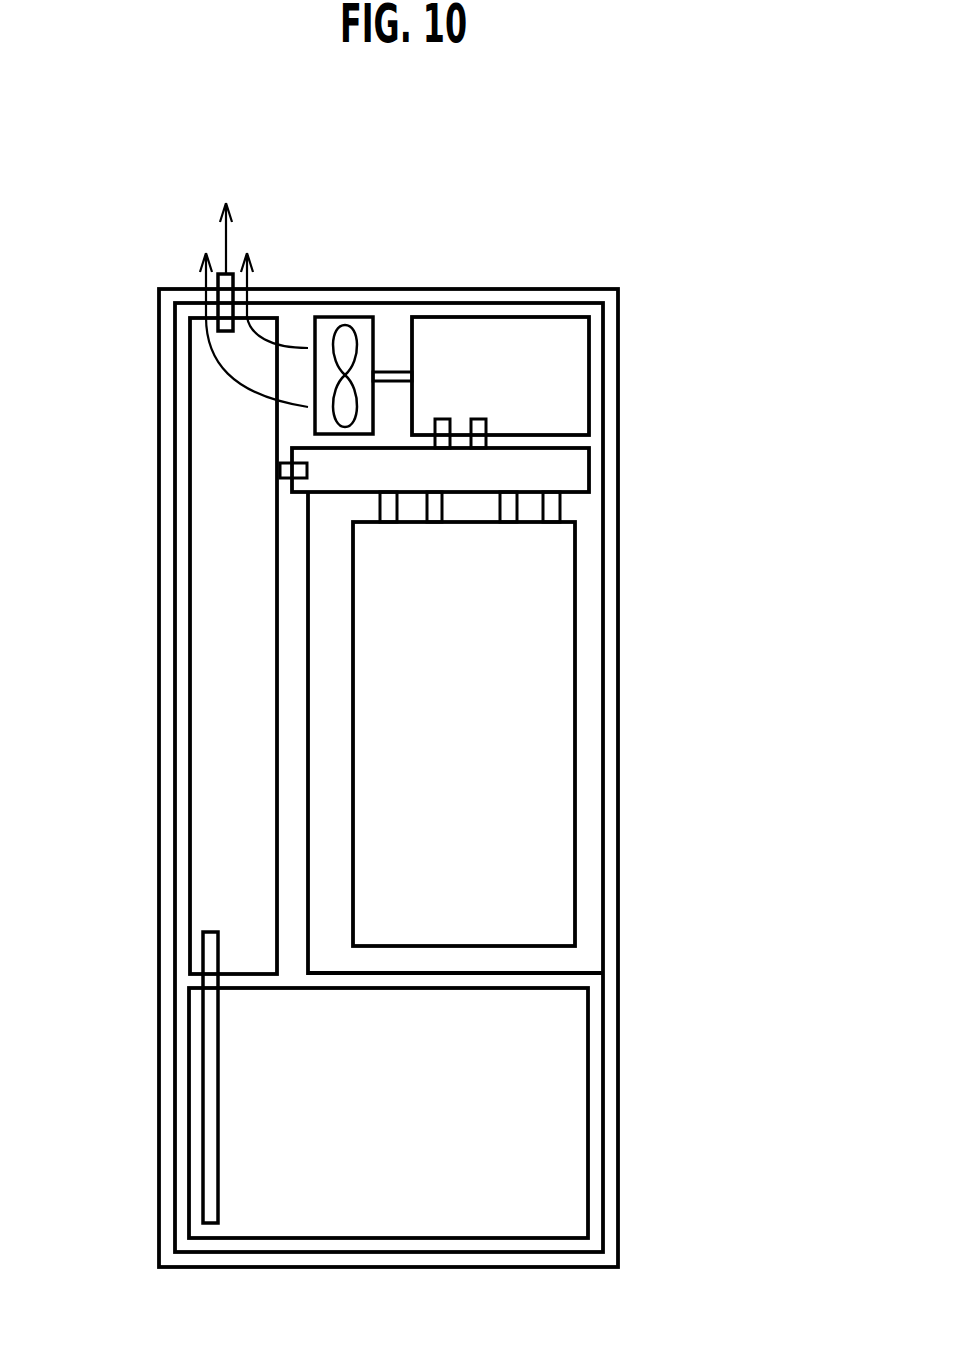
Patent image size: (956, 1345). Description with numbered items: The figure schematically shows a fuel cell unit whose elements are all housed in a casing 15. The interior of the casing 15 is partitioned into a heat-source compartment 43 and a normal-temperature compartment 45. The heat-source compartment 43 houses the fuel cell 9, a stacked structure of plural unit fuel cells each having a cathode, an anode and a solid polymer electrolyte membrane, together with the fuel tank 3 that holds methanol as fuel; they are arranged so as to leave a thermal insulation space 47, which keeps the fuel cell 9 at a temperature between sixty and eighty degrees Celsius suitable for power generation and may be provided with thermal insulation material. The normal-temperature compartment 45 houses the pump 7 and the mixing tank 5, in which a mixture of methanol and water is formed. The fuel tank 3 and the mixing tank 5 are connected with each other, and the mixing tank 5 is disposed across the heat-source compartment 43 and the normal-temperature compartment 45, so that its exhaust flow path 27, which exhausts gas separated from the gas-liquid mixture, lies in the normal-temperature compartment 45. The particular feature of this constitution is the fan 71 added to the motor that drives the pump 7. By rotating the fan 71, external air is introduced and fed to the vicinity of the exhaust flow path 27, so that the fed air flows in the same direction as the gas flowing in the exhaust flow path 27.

The fuel tank 3 is at (552, 1098).
The mixing tank 5 is at (213, 570).
The pump 7 is at (546, 338).
The fuel cell 9 is at (552, 760).
The casing 15 is at (622, 385).
The exhaust flow path 27 is at (222, 273).
The heat-source compartment 43 is at (183, 1150).
The normal-temperature compartment 45 is at (393, 343).
The thermal insulation space 47 is at (573, 467).
The fan 71 is at (338, 317).